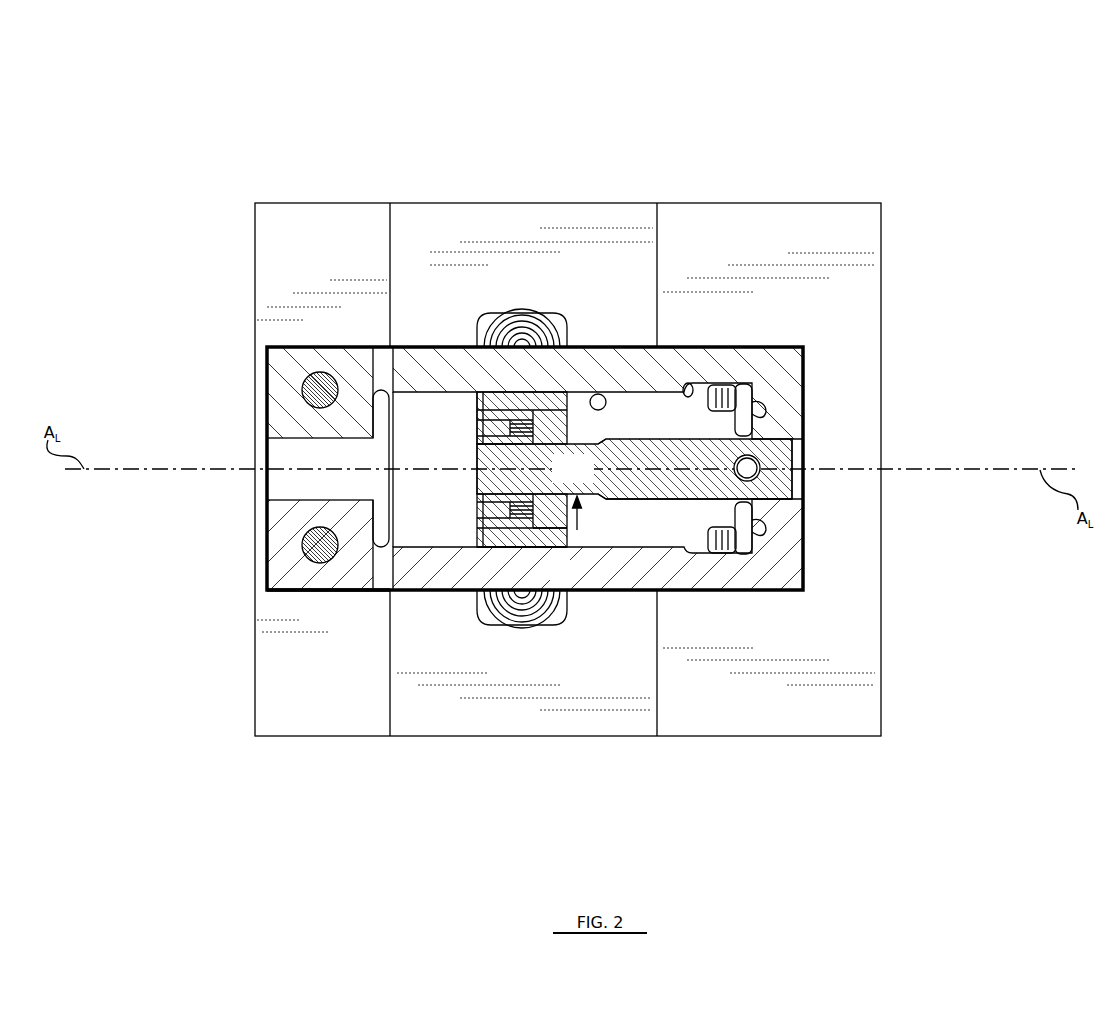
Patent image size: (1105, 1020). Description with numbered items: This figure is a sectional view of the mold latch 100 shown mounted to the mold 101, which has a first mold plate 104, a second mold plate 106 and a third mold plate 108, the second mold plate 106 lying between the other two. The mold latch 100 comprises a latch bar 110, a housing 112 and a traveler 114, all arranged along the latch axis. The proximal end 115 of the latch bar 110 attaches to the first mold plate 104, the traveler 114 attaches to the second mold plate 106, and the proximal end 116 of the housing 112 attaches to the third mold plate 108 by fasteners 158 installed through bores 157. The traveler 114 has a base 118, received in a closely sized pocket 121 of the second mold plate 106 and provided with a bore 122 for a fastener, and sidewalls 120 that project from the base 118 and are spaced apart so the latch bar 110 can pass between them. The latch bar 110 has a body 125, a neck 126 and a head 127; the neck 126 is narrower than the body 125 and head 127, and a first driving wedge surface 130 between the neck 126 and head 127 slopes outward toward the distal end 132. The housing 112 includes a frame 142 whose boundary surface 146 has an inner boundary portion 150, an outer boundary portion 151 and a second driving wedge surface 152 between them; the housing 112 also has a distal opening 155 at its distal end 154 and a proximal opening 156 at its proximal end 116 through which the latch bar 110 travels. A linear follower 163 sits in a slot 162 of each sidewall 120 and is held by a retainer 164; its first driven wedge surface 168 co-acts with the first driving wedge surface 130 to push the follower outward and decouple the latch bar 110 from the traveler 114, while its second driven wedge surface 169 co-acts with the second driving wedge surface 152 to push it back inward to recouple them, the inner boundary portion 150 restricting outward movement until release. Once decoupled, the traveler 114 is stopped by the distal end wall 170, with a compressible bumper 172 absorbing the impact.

The mold latch 100 is at (247, 330).
The mold 101 is at (850, 102).
The first mold plate 104 is at (868, 617).
The second mold plate 106 is at (562, 739).
The third mold plate 108 is at (258, 619).
The latch bar 110 is at (762, 412).
The housing 112 is at (291, 322).
The traveler 114 is at (462, 411).
The proximal end of latch bar 115 is at (805, 443).
The proximal end of housing 116 is at (268, 560).
The base 118 is at (487, 612).
The sidewalls 120 is at (577, 430).
The pocket 121 is at (556, 607).
The bore 122 is at (512, 580).
The body 125 is at (692, 483).
The neck 126 is at (583, 502).
The head 127 is at (477, 453).
The first driving wedge surface 130 is at (523, 428).
The distal end of latch bar 132 is at (473, 472).
The frame 142 is at (313, 600).
The boundary surface 146 is at (598, 544).
The inner boundary portion 150 is at (598, 394).
The outer boundary portion 151 is at (722, 385).
The second driving wedge surface 152 is at (690, 383).
The distal end of housing 154 is at (806, 568).
The distal opening 155 is at (795, 457).
The proximal opening 156 is at (268, 488).
The bores 157 is at (312, 386).
The fasteners 158 is at (330, 388).
The slot 162 is at (478, 526).
The linear follower 163 is at (513, 543).
The retainer 164 is at (548, 530).
The first driven wedge surface 168 is at (477, 480).
The second driven wedge surface 169 is at (505, 412).
The distal end wall 170 is at (757, 535).
The bumper 172 is at (745, 523).